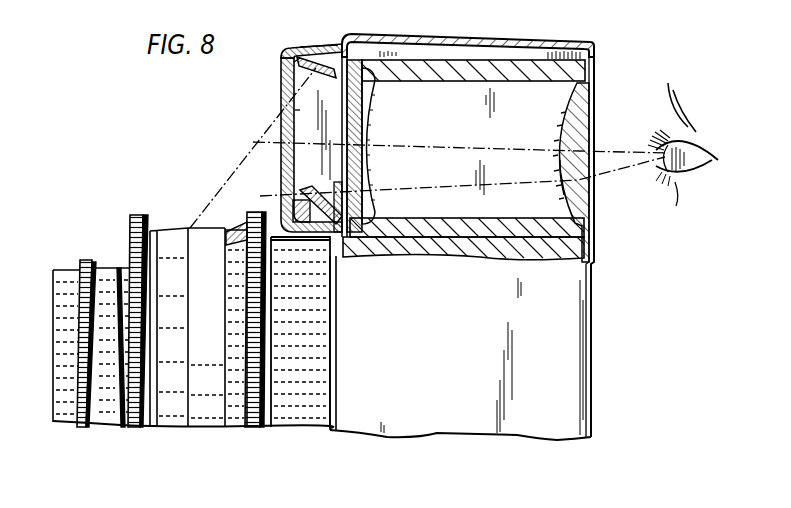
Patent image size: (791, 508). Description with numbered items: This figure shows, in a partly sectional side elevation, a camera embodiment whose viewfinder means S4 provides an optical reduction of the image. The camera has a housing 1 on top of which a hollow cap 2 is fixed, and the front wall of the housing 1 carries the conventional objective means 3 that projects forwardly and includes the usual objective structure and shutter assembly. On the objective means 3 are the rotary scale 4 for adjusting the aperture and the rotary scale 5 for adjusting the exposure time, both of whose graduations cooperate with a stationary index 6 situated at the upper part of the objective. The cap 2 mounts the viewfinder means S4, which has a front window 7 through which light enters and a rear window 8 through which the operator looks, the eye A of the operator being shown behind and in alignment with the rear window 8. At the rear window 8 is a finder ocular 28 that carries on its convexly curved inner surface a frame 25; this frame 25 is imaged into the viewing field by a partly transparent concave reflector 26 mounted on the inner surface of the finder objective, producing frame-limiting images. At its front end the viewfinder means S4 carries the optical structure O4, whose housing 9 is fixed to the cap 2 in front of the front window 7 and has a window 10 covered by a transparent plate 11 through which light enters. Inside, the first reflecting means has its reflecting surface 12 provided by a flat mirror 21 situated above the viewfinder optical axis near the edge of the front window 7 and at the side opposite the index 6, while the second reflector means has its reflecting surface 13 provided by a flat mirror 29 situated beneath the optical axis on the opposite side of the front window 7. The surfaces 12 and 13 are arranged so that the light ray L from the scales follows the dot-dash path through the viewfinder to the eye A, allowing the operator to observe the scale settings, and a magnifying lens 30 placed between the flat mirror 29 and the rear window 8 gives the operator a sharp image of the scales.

The housing 1 is at (570, 332).
The hollow enclosure or cap 2 is at (510, 42).
The objective means 3 is at (108, 434).
The rotary scale 4 is at (171, 418).
The rotary scale 5 is at (206, 418).
The stationary index 6 is at (232, 224).
The front window 7 is at (345, 107).
The rear window 8 is at (593, 121).
The housing 9 is at (291, 48).
The window 10 is at (281, 75).
The transparent plate 11 is at (298, 110).
The reflecting surface 12 is at (287, 96).
The reflecting surface 13 is at (310, 194).
The flat mirror 21 is at (325, 68).
The frame 25 is at (560, 183).
The concave reflector 26 is at (367, 168).
The finder ocular 28 is at (594, 141).
The flat mirror 29 is at (296, 197).
The magnifying lens 30 is at (364, 239).
The eye A is at (661, 169).
The light ray L is at (204, 219).
The optical structure O4 is at (307, 46).
The viewfinder means S4 is at (470, 38).